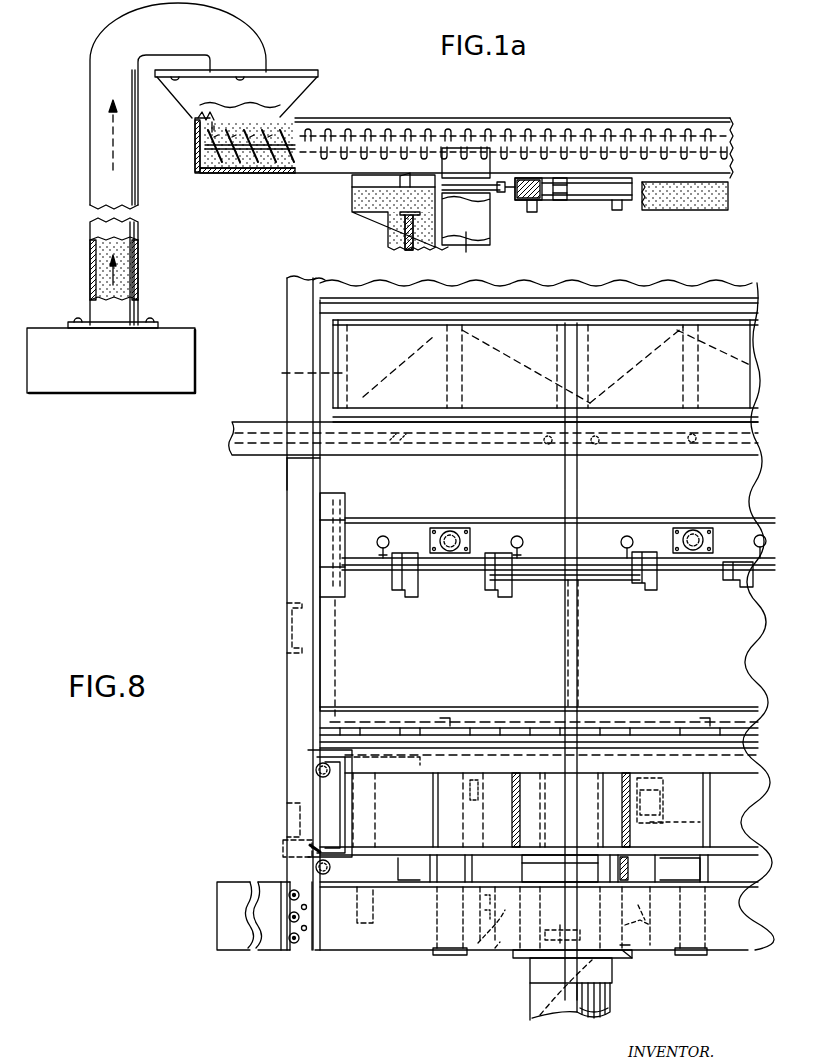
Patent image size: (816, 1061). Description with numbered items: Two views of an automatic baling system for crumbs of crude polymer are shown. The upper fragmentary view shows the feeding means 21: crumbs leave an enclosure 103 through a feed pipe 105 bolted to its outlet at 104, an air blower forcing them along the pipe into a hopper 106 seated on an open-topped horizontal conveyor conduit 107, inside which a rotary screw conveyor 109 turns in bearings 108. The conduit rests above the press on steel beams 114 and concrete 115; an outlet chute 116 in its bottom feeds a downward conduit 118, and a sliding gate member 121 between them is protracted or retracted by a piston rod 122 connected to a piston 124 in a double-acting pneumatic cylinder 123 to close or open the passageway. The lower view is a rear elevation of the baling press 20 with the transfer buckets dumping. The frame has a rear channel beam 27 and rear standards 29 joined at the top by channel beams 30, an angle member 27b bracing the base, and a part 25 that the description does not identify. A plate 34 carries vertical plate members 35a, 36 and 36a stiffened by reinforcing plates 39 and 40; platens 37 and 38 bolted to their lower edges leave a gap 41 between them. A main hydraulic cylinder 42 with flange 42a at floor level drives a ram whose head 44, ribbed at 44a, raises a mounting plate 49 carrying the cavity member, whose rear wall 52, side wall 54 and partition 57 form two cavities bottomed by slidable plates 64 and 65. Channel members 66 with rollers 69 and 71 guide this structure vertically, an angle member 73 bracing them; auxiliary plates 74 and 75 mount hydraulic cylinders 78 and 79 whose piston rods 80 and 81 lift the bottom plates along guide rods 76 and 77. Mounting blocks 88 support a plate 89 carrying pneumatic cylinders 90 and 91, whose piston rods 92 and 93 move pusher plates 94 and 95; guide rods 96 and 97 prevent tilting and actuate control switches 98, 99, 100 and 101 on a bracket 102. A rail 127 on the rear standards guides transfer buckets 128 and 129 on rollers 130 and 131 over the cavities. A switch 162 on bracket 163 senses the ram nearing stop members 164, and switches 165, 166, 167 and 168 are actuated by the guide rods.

In FIG. 1A, the feeding means 21 is at (480, 115).
In FIG. 1A, the enclosure 103 is at (80, 386).
In FIG. 1A, the bolted connection 104 is at (150, 325).
In FIG. 1A, the feed pipe 105 is at (140, 229).
In FIG. 1A, the hopper 106 is at (302, 85).
In FIG. 1A, the conveyor conduit 107 is at (385, 118).
In FIG. 1A, the bearings 108 is at (198, 122).
In FIG. 1A, the rotary screw conveyor 109 is at (278, 174).
In FIG. 1A, the steel beams 114 is at (415, 248).
In FIG. 1A, the concrete 115 is at (392, 235).
In FIG. 1A, the outlet chute 116 is at (466, 163).
In FIG. 1A, the conduit 118 is at (480, 242).
In FIG. 1A, the gate member 121 is at (500, 193).
In FIG. 1A, the piston rod 122 is at (535, 205).
In FIG. 1A, the double-acting pneumatic cylinder 123 is at (600, 202).
In FIG. 1A, the piston 124 is at (560, 203).
In FIG. 8, the baling press 20 is at (242, 466).
In FIG. 8, the frame side 25 is at (749, 332).
In FIG. 8, the rear horizontal channel beam 27 is at (268, 950).
In FIG. 8, the angle member 27b is at (550, 938).
In FIG. 8, the rear standards 29 is at (290, 731).
In FIG. 8, the channel beams 30 is at (319, 284).
In FIG. 8, the plate 34 is at (538, 298).
In FIG. 8, the vertical plate member 35a is at (618, 298).
In FIG. 8, the vertical plate member 36 is at (355, 402).
In FIG. 8, the vertical plate member 36a is at (434, 298).
In FIG. 8, the platen 37 is at (625, 410).
In FIG. 8, the platen 38 is at (405, 410).
In FIG. 8, the reinforcing plate 39 is at (672, 298).
In FIG. 8, the reinforcing plate 40 is at (366, 298).
In FIG. 8, the gap 41 is at (585, 398).
In FIG. 8, the main hydraulic power cylinder 42 is at (548, 1015).
In FIG. 8, the uppermost flange 42a is at (592, 1020).
In FIG. 8, the ram head 44 is at (560, 868).
In FIG. 8, the lateral ribs 44a is at (540, 1012).
In FIG. 8, the mounting plate 49 is at (557, 810).
In FIG. 8, the rear wall 52 is at (480, 661).
In FIG. 8, the side wall 54 is at (337, 668).
In FIG. 8, the central partition 57 is at (580, 651).
In FIG. 8, the cavity bottom plate 64 is at (652, 708).
In FIG. 8, the cavity bottom plate 65 is at (404, 712).
In FIG. 8, the channel members 66 is at (345, 787).
In FIG. 8, the roller 69 is at (315, 771).
In FIG. 8, the roller 71 is at (330, 876).
In FIG. 8, the angle member 73 is at (398, 780).
In FIG. 8, the auxiliary mounting plate 74 is at (741, 796).
In FIG. 8, the auxiliary mounting plate 75 is at (425, 765).
In FIG. 8, the guide rods 76 is at (642, 950).
In FIG. 8, the guide rods 77 is at (365, 877).
In FIG. 8, the hydraulic cylinder 78 is at (715, 948).
In FIG. 8, the hydraulic cylinder 79 is at (428, 945).
In FIG. 8, the piston rod 80 is at (666, 810).
In FIG. 8, the piston rod 81 is at (462, 790).
In FIG. 8, the mounting blocks 88 is at (345, 598).
In FIG. 8, the mounting plate 89 is at (560, 572).
In FIG. 8, the pneumatic cylinder 90 is at (698, 560).
In FIG. 8, the pneumatic cylinder 91 is at (455, 560).
In FIG. 8, the piston rod 92 is at (695, 530).
In FIG. 8, the piston rod 93 is at (455, 530).
In FIG. 8, the pusher plate 94 is at (610, 558).
In FIG. 8, the pusher plate 95 is at (535, 558).
In FIG. 8, the guide rods 96 is at (630, 536).
In FIG. 8, the guide rods 97 is at (386, 536).
In FIG. 8, the control switch 98 is at (742, 590).
In FIG. 8, the control switch 99 is at (650, 592).
In FIG. 8, the control switch 100 is at (498, 598).
In FIG. 8, the control switch 101 is at (403, 598).
In FIG. 8, the bracket 102 is at (600, 582).
In FIG. 8, the rail 127 is at (412, 458).
In FIG. 8, the transfer bucket 128 is at (600, 486).
In FIG. 8, the transfer bucket 129 is at (332, 473).
In FIG. 8, the rollers 130 is at (694, 436).
In FIG. 8, the rollers 131 is at (546, 437).
In FIG. 8, the switch 162 is at (283, 846).
In FIG. 8, the bracket 163 is at (287, 818).
In FIG. 8, the stop members 164 is at (398, 866).
In FIG. 8, the switch 165 is at (645, 920).
In FIG. 8, the switch 166 is at (704, 822).
In FIG. 8, the switch 167 is at (470, 955).
In FIG. 8, the switch 168 is at (490, 712).